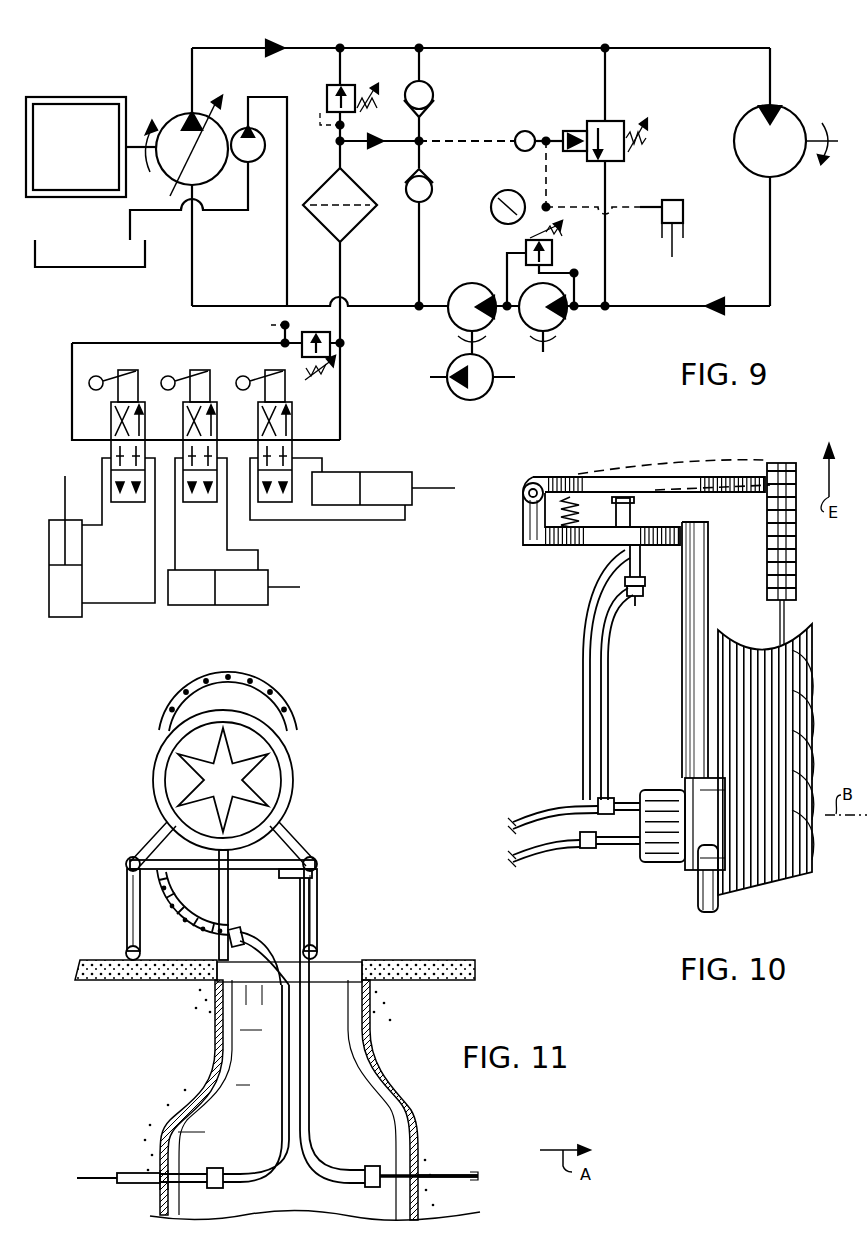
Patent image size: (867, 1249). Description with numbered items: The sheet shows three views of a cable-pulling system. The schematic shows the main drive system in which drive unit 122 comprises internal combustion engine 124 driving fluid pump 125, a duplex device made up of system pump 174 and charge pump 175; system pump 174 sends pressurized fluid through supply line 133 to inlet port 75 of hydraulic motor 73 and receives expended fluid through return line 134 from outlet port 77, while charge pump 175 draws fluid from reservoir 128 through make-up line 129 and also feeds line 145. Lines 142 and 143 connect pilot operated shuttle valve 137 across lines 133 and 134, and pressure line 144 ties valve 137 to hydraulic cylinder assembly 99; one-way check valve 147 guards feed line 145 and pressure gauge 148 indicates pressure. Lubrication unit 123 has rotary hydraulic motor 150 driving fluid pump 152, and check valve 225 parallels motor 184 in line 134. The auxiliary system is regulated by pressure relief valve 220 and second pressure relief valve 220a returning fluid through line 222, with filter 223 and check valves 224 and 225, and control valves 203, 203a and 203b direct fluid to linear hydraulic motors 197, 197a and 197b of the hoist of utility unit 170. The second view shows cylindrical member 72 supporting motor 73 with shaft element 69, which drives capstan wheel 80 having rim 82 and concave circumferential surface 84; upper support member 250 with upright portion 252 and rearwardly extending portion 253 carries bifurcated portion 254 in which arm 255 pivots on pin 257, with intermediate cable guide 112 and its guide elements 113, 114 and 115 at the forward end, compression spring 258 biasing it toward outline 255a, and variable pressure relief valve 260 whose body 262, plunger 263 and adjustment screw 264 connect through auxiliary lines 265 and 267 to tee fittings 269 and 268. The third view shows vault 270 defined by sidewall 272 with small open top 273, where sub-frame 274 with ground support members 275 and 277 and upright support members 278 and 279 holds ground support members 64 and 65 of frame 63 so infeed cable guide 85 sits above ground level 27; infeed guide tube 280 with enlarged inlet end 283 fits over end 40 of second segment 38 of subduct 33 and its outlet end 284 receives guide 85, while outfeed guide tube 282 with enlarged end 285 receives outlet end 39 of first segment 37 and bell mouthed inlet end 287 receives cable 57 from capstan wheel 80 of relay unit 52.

In FIG. 9, the drive unit 122 is at (152, 86).
In FIG. 9, the internal combustion engine 124 is at (100, 96).
In FIG. 9, the fluid pump 125 is at (181, 114).
In FIG. 9, the make-up line 129 is at (176, 186).
In FIG. 9, the reservoir 128 is at (55, 268).
In FIG. 9, the supply line 133 is at (268, 46).
In FIG. 10, the supply line 133 is at (513, 820).
In FIG. 9, the return line 134 is at (652, 308).
In FIG. 10, the return line 134 is at (513, 856).
In FIG. 9, the system pump 174 is at (205, 186).
In FIG. 9, the charge pump 175 is at (262, 122).
In FIG. 9, the feed line 145 is at (287, 220).
In FIG. 9, the pressure relief valve 220 is at (332, 333).
In FIG. 9, the second pressure relief valve 220a is at (328, 92).
In FIG. 9, the line 222 is at (345, 78).
In FIG. 9, the filter 223 is at (348, 237).
In FIG. 9, the check valve 224 is at (433, 82).
In FIG. 9, the check valve 225 is at (433, 170).
In FIG. 9, the one-way check valve 147 is at (525, 131).
In FIG. 9, the pressure gauge 148 is at (520, 175).
In FIG. 9, the line 142 is at (605, 84).
In FIG. 9, the pilot operated shuttle valve 137 is at (612, 120).
In FIG. 9, the pressure line 144 is at (620, 205).
In FIG. 9, the hydraulic cylinder assembly 99 is at (686, 215).
In FIG. 9, the hydraulic motor 73 is at (806, 110).
In FIG. 10, the hydraulic motor 73 is at (648, 864).
In FIG. 9, the utility unit 170 is at (788, 273).
In FIG. 9, the line 143 is at (607, 262).
In FIG. 9, the rotary hydraulic motor 150 is at (478, 262).
In FIG. 9, the motor 184 is at (567, 320).
In FIG. 9, the lubrication unit 123 is at (445, 338).
In FIG. 9, the fluid pump 152 is at (452, 394).
In FIG. 9, the control valve 203 is at (116, 375).
In FIG. 9, the control valve 203a is at (190, 375).
In FIG. 9, the control valve 203b is at (268, 375).
In FIG. 9, the double acting linear hydraulic motor 197 is at (84, 588).
In FIG. 9, the second double acting linear hydraulic motor 197a is at (198, 605).
In FIG. 9, the third double acting linear hydraulic motor 197b is at (368, 472).
In FIG. 10, the pin 257 is at (533, 483).
In FIG. 10, the compression spring 258 is at (573, 497).
In FIG. 10, the arm 255 is at (748, 477).
In FIG. 10, the broken partial outline of arm 255a is at (700, 462).
In FIG. 10, the roller guide 115 is at (793, 447).
In FIG. 10, the intermediate cable guide 112 is at (767, 530).
In FIG. 11, the intermediate cable guide 112 is at (186, 684).
In FIG. 10, the roller 114 is at (767, 572).
In FIG. 10, the roller 113 is at (798, 588).
In FIG. 10, the pull line 57 is at (782, 617).
In FIG. 10, the capstan wheel 80 is at (814, 655).
In FIG. 11, the capstan wheel 80 is at (294, 775).
In FIG. 10, the rim 82 is at (814, 695).
In FIG. 10, the bifurcated portion 254 is at (523, 530).
In FIG. 10, the rearwardly extending portion 253 is at (530, 550).
In FIG. 10, the variable pressure relief valve 260 is at (612, 570).
In FIG. 10, the plunger 263 is at (636, 503).
In FIG. 10, the body 262 is at (643, 590).
In FIG. 10, the adjustment screw 264 is at (626, 606).
In FIG. 10, the upper support member 250 is at (682, 680).
In FIG. 10, the upright portion 252 is at (682, 698).
In FIG. 10, the auxiliary line 265 is at (610, 745).
In FIG. 10, the auxiliary line 267 is at (585, 723).
In FIG. 10, the inlet port 75 is at (640, 790).
In FIG. 10, the cylindrical member 72 is at (688, 780).
In FIG. 10, the tee fitting 269 is at (588, 801).
In FIG. 10, the tee fitting 268 is at (590, 850).
In FIG. 10, the outlet port 77 is at (634, 848).
In FIG. 10, the shaft 69 is at (698, 888).
In FIG. 10, the frame 63 is at (698, 910).
In FIG. 11, the frame 63 is at (296, 845).
In FIG. 10, the concave circumferential surface 84 is at (810, 878).
In FIG. 11, the relay unit 52 is at (290, 700).
In FIG. 11, the ground support member 64 is at (126, 862).
In FIG. 11, the ground support member 65 is at (318, 862).
In FIG. 11, the upright support member 279 is at (127, 893).
In FIG. 11, the upright support member 278 is at (317, 892).
In FIG. 11, the bell mouthed inlet end 287 is at (283, 878).
In FIG. 11, the sub-frame 274 is at (318, 915).
In FIG. 11, the outlet end 284 is at (274, 948).
In FIG. 11, the ground support member 275 is at (318, 947).
In FIG. 11, the ground support member 277 is at (124, 952).
In FIG. 11, the infeed cable guide 85 is at (178, 922).
In FIG. 11, the open top 273 is at (368, 960).
In FIG. 11, the ground level 27 is at (470, 960).
In FIG. 11, the infeed guide tube 280 is at (310, 1062).
In FIG. 11, the vault 270 is at (265, 1130).
In FIG. 11, the sidewall 272 is at (418, 1100).
In FIG. 11, the enlarged inlet end 283 is at (212, 1170).
In FIG. 11, the enlarged end 285 is at (380, 1152).
In FIG. 11, the first segment 37 is at (478, 1174).
In FIG. 11, the second segment 38 is at (124, 1185).
In FIG. 11, the inlet end 40 is at (205, 1188).
In FIG. 11, the outfeed guide tube 282 is at (298, 1183).
In FIG. 11, the outlet end 39 is at (358, 1187).
In FIG. 11, the subduct 33 is at (462, 1188).